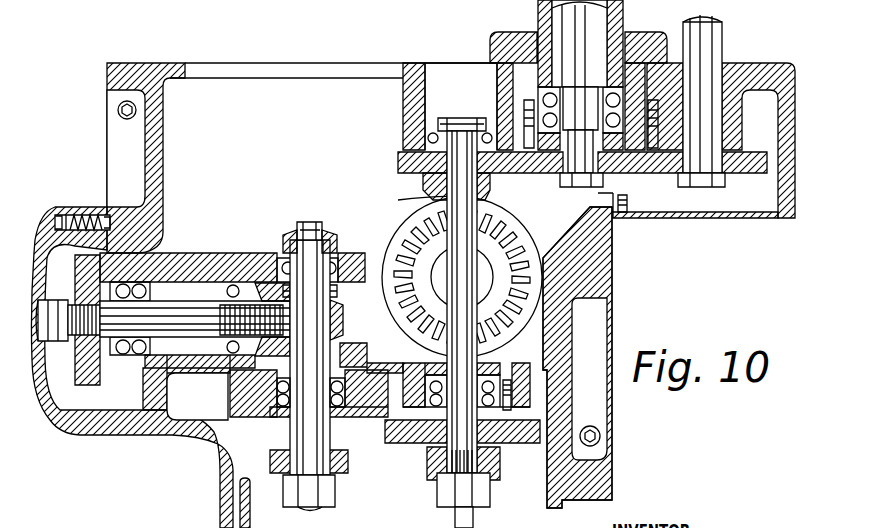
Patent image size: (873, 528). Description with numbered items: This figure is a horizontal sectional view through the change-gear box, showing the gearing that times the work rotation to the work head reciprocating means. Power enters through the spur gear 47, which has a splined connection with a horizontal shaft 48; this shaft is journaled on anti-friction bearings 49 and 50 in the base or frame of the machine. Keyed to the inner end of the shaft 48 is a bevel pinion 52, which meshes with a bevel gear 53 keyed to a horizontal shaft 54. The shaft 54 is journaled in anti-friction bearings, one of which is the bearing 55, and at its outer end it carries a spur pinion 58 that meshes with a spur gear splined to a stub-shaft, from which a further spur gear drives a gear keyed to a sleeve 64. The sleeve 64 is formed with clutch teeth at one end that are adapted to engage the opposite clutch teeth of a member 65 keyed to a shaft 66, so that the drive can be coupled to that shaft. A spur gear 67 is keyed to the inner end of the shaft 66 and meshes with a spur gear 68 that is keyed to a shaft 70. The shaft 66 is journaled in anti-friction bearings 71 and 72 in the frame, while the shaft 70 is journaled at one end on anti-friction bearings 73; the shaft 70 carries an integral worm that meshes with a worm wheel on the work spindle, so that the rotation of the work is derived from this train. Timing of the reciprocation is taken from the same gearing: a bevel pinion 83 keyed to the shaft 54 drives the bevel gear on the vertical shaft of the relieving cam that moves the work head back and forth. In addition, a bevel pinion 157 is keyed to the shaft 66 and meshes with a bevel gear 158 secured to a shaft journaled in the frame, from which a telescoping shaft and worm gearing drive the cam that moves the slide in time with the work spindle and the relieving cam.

The spur gear 47 is at (100, 412).
The horizontal shaft 48 is at (195, 262).
The anti-friction bearing 49 is at (140, 262).
The anti-friction bearing 50 is at (245, 258).
The bevel pinion 52 is at (278, 254).
The bevel gear 53 is at (338, 350).
The horizontal shaft 54 is at (232, 386).
The anti-friction bearing 55 is at (326, 252).
The spur pinion 58 is at (340, 474).
The sleeve 64 is at (497, 466).
The clutch member 65 is at (433, 487).
The shaft 66 is at (560, 232).
The spur gear 67 is at (398, 168).
The spur gear 68 is at (633, 205).
The shaft 70 is at (612, 3).
The anti-friction bearing 71 is at (512, 396).
The anti-friction bearing 72 is at (412, 130).
The anti-friction bearings 73 is at (525, 110).
The bevel pinion 83 is at (340, 207).
The bevel pinion 157 is at (560, 340).
The bevel gear 158 is at (380, 262).